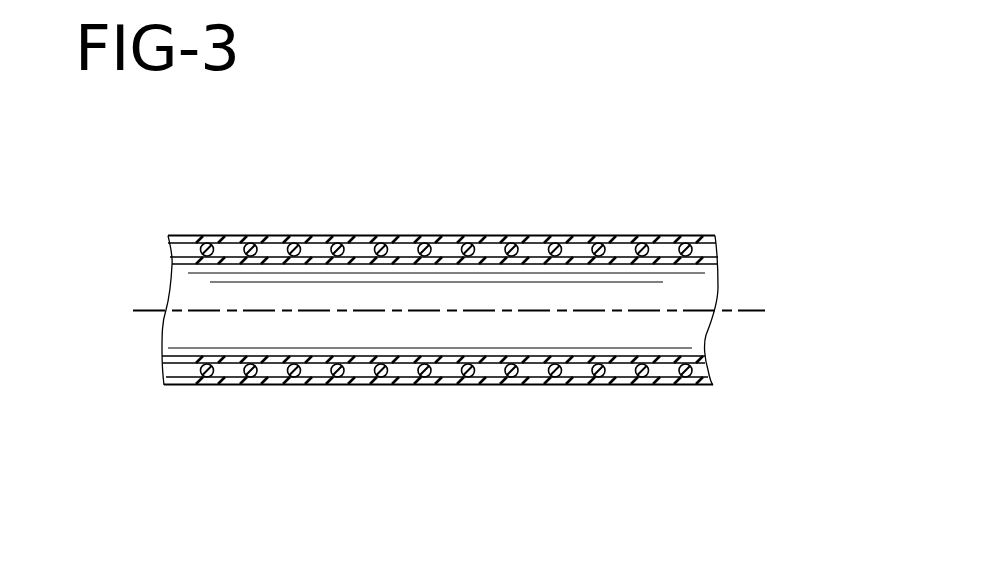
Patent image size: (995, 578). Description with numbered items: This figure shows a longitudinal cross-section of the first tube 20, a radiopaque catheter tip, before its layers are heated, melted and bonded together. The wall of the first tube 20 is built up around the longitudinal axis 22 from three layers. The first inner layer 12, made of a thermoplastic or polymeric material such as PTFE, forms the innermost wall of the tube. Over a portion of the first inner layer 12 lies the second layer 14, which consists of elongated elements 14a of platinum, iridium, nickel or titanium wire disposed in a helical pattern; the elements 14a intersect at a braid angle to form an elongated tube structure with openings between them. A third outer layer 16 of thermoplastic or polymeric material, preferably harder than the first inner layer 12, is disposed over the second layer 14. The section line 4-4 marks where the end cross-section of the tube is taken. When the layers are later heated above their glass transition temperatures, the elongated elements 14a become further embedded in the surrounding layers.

The section line 4- 4 is at (312, 226).
The first inner layer 12 is at (173, 263).
The second layer 14 is at (507, 312).
The elongated elements 14a is at (424, 249).
The third outer layer 16 is at (196, 238).
The first tube 20 is at (466, 288).
The longitudinal axis 22 is at (145, 313).